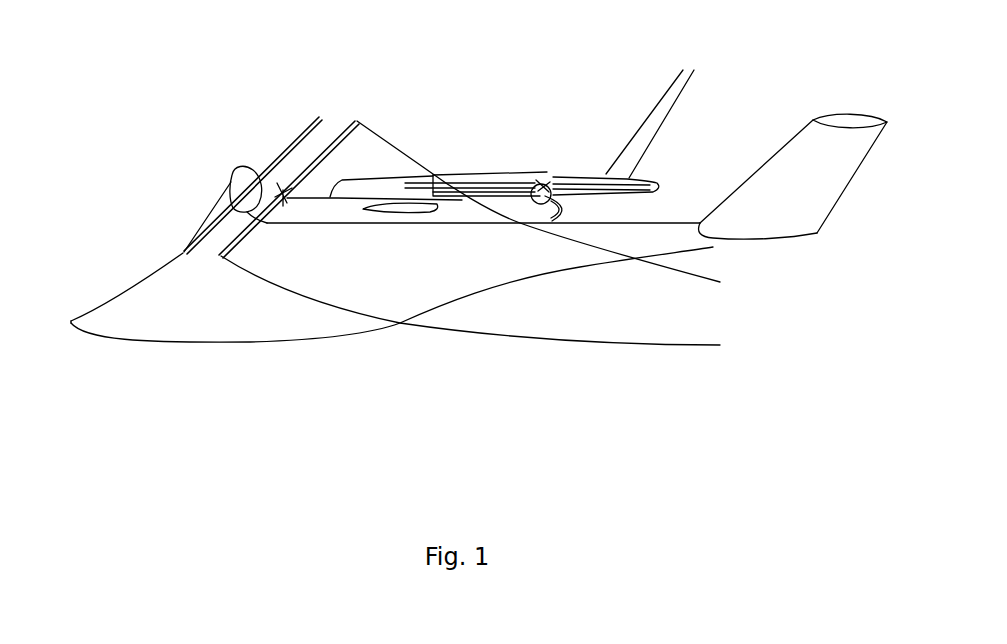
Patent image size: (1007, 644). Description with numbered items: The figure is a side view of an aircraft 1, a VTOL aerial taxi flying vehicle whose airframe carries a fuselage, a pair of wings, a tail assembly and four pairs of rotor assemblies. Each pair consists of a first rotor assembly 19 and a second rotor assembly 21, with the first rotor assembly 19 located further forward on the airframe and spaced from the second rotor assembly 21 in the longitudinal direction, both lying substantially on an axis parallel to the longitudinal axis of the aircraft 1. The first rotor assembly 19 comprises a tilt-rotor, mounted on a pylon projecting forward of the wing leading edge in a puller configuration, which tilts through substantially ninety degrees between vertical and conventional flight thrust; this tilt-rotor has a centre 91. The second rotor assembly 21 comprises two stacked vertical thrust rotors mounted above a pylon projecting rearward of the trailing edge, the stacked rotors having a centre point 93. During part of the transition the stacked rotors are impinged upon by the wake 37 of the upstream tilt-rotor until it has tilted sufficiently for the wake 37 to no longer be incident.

The aircraft 1 is at (122, 382).
The first rotor assembly 19 is at (232, 168).
The second rotor assembly 21 is at (631, 111).
The wake 37 is at (538, 323).
The centre 91 is at (281, 195).
The centre point 93 is at (545, 185).